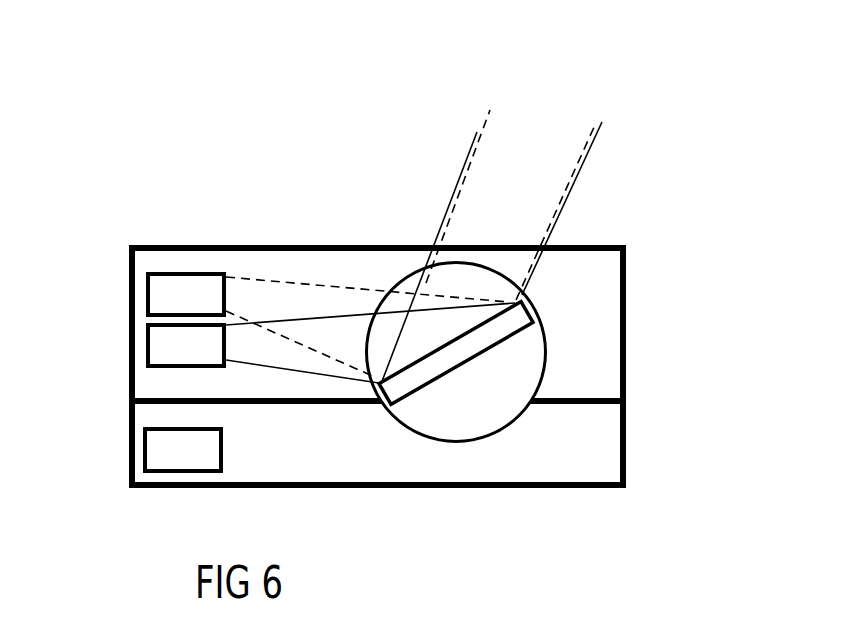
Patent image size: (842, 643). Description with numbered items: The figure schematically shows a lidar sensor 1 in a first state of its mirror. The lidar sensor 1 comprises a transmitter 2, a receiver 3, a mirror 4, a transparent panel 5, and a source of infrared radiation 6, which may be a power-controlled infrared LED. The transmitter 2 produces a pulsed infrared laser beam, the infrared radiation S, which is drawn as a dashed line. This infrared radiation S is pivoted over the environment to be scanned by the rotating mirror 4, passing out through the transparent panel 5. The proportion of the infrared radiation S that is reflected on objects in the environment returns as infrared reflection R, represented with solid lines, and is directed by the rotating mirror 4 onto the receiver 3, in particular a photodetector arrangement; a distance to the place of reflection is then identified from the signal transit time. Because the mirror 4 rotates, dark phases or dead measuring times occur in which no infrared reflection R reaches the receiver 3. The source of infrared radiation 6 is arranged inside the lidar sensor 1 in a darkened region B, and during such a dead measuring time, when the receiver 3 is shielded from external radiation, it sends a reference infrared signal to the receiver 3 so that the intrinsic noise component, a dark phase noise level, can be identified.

The lidar sensor 1 is at (150, 185).
The transmitter 2 is at (177, 310).
The receiver 3 is at (177, 362).
The mirror 4 is at (548, 328).
The transparent panel 5 is at (371, 245).
The source of infrared radiation 6 is at (174, 466).
The darkened region B is at (613, 443).
The infrared reflection R is at (252, 366).
The infrared radiation S is at (272, 282).